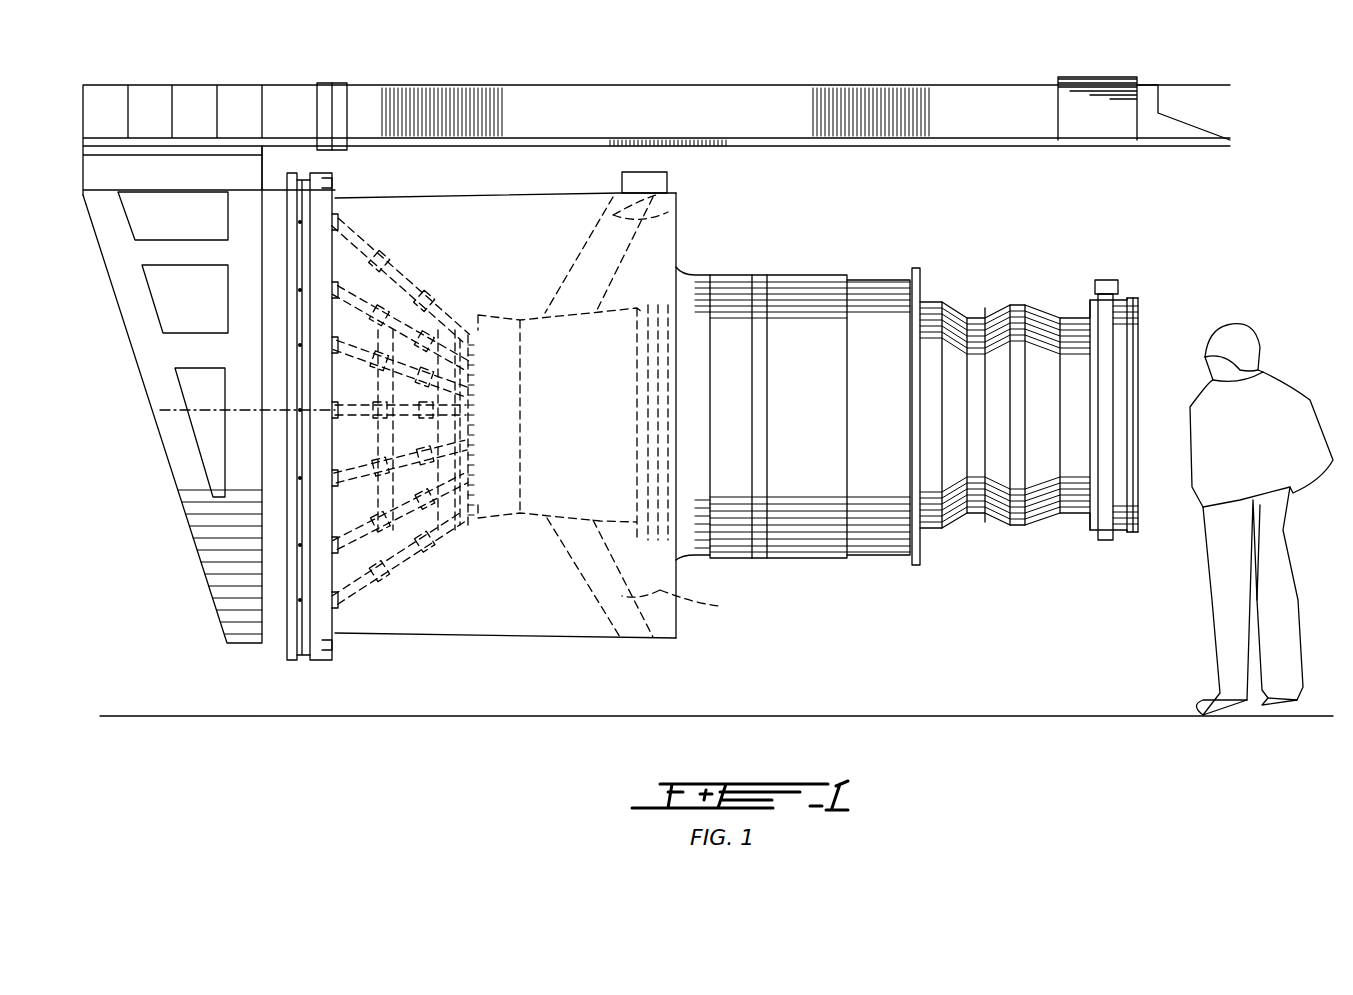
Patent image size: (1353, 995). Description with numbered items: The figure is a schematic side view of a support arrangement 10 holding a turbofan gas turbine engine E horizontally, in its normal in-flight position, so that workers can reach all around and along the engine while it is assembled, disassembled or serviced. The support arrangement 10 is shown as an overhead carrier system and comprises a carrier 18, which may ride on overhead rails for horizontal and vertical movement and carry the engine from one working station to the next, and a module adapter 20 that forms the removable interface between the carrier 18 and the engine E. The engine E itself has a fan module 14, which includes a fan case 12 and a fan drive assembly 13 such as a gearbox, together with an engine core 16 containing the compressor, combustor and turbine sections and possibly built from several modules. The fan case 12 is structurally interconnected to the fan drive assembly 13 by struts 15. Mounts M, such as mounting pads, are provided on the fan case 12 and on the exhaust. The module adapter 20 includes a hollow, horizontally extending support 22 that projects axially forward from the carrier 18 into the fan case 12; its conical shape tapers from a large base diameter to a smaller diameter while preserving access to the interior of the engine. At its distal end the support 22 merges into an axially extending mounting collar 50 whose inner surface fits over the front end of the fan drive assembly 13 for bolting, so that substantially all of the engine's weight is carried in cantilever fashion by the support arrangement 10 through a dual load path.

The support arrangement 10 is at (389, 82).
The fan case 12 is at (513, 196).
The fan drive assembly 13 is at (520, 518).
The fan module 14 is at (683, 238).
The struts 15 is at (668, 212).
The engine core 16 is at (808, 270).
The carrier 18 is at (146, 430).
The module adapter 20 is at (346, 190).
The support 22 is at (383, 571).
The mounting collar 50 is at (468, 335).
The gas turbine engine E is at (1016, 292).
The mounts M is at (645, 182).